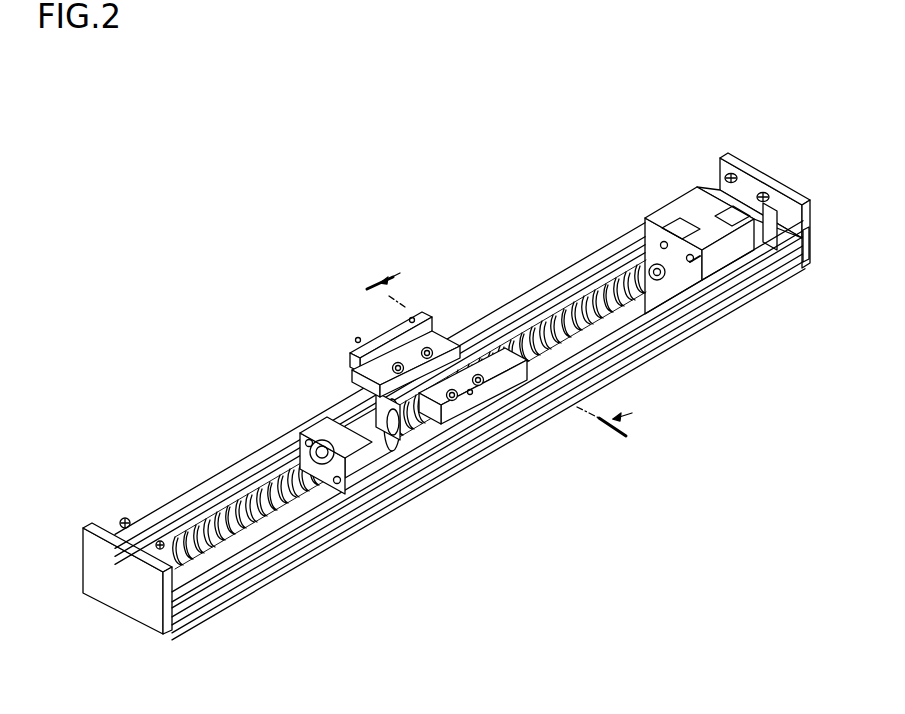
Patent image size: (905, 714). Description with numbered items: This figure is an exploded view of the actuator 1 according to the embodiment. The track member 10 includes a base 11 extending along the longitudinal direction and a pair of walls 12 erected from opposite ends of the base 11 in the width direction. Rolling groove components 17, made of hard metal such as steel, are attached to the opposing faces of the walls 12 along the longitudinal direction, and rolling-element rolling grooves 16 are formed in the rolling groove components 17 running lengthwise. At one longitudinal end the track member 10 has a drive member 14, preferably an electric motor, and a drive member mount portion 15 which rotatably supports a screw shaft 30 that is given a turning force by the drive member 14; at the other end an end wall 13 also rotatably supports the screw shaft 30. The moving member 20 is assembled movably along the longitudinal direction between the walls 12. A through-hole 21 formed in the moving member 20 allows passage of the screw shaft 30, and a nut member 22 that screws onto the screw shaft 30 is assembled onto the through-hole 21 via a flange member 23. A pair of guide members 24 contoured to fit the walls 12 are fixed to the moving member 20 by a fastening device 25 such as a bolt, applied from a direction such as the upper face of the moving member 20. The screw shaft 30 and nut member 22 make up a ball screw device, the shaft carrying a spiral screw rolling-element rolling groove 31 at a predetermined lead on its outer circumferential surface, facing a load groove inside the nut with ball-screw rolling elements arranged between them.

The actuator 1 is at (736, 94).
The track member 10 is at (338, 626).
The base 11 is at (243, 535).
The walls 12 is at (200, 493).
The end wall 13 is at (136, 590).
The drive member 14 is at (743, 184).
The drive member mount portion 15 is at (682, 192).
The rolling-element rolling grooves 16 is at (273, 457).
The rolling groove components 17 is at (238, 492).
The moving member 20 is at (427, 318).
The through-hole 21 is at (380, 420).
The nut member 22 is at (380, 450).
The flange member 23 is at (355, 483).
The guide members 24 is at (425, 438).
The fastening device 25 is at (452, 334).
The screw shaft 30 is at (617, 262).
The screw rolling-element rolling groove 31 is at (577, 300).